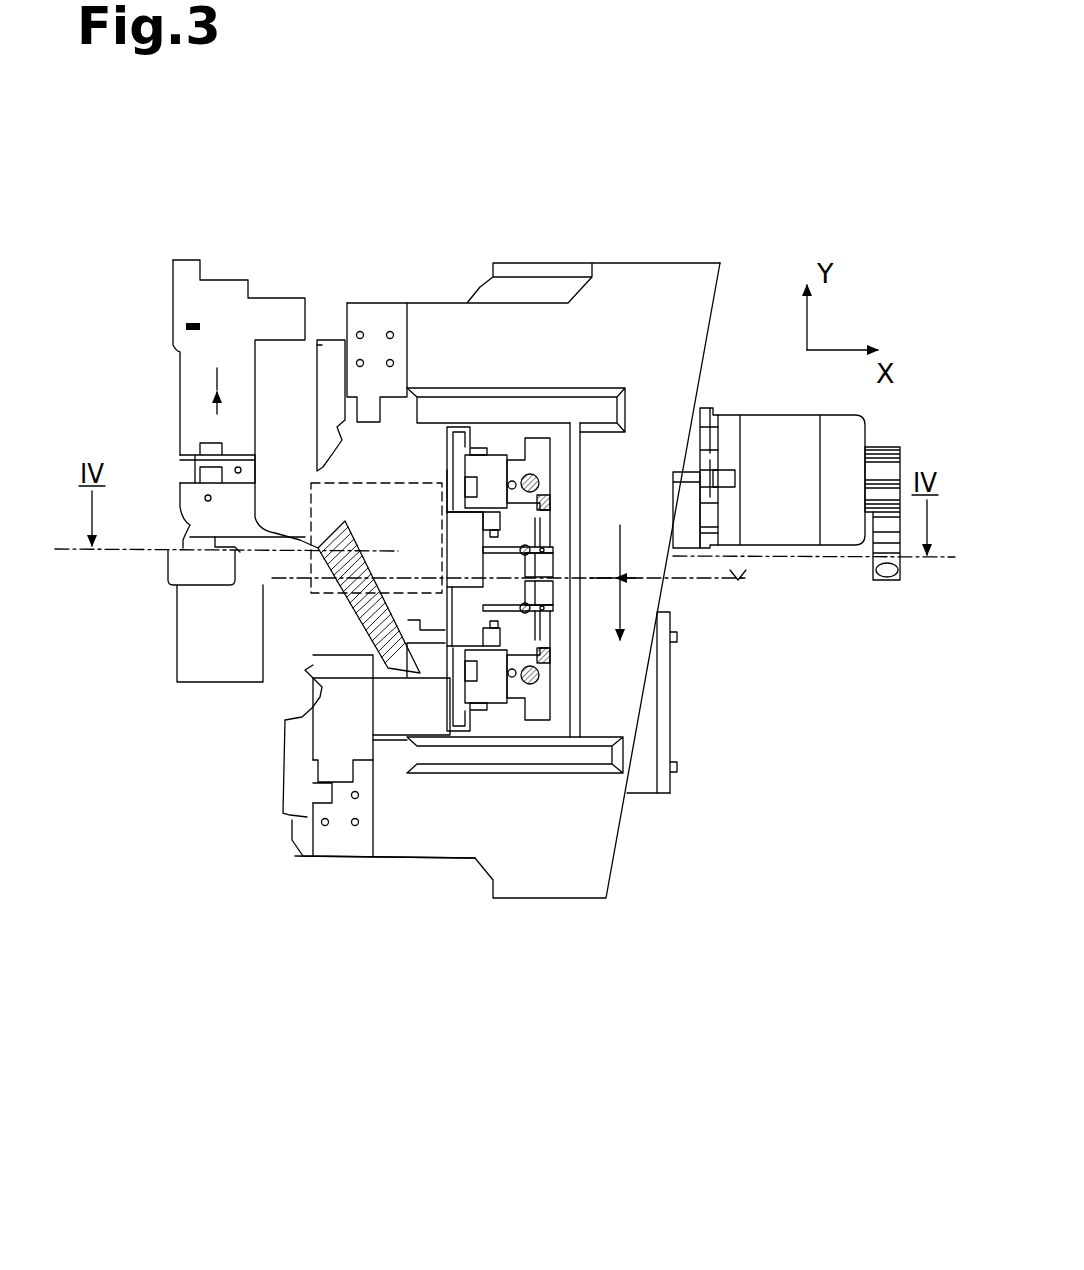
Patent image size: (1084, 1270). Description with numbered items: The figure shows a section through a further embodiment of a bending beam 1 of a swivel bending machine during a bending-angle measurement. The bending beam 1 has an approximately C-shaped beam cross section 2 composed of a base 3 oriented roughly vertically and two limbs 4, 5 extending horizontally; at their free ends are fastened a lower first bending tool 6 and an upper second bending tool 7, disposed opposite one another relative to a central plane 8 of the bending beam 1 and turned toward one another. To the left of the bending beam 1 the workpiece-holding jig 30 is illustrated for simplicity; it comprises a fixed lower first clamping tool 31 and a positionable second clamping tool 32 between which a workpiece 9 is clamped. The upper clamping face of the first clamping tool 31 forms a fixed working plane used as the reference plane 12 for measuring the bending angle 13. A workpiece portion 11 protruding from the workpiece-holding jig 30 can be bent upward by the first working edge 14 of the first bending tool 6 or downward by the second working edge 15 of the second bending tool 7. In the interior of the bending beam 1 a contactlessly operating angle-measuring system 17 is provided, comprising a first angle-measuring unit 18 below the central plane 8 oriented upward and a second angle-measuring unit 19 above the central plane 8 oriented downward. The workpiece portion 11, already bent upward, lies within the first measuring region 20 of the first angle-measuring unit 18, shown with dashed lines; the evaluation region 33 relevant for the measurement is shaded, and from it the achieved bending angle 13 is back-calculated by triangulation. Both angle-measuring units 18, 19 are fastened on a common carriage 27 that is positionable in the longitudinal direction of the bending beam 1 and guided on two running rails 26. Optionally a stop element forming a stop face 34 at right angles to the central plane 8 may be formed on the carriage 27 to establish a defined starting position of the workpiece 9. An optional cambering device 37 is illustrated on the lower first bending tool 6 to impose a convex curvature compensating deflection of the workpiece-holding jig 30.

The bending beam 1 is at (526, 170).
The beam cross section 2 is at (681, 330).
The base 3 is at (675, 599).
The limb 4 is at (565, 252).
The limb 5 is at (448, 878).
The first bending tool 6 is at (271, 829).
The second bending tool 7 is at (323, 338).
The central plane 8 is at (745, 576).
The workpiece 9 is at (155, 548).
The workpiece portion 11 is at (313, 518).
The reference plane 12 is at (397, 548).
The bending angle 13 is at (349, 521).
The first working edge 14 is at (306, 670).
The second working edge 15 is at (311, 458).
The angle-measuring system 17 is at (492, 447).
The first angle-measuring unit 18 is at (390, 722).
The second angle-measuring unit 19 is at (433, 440).
The first measuring region 20 is at (315, 600).
The running rails 26 is at (548, 478).
The carriage 27 is at (472, 608).
The workpiece-holding jig 30 is at (170, 234).
The first clamping tool 31 is at (210, 628).
The second clamping tool 32 is at (195, 488).
The evaluation region 33 is at (373, 645).
The stop face 34 is at (306, 685).
The cambering device 37 is at (313, 817).